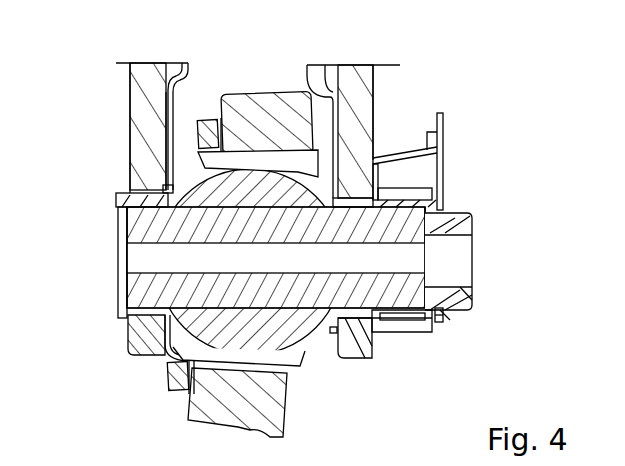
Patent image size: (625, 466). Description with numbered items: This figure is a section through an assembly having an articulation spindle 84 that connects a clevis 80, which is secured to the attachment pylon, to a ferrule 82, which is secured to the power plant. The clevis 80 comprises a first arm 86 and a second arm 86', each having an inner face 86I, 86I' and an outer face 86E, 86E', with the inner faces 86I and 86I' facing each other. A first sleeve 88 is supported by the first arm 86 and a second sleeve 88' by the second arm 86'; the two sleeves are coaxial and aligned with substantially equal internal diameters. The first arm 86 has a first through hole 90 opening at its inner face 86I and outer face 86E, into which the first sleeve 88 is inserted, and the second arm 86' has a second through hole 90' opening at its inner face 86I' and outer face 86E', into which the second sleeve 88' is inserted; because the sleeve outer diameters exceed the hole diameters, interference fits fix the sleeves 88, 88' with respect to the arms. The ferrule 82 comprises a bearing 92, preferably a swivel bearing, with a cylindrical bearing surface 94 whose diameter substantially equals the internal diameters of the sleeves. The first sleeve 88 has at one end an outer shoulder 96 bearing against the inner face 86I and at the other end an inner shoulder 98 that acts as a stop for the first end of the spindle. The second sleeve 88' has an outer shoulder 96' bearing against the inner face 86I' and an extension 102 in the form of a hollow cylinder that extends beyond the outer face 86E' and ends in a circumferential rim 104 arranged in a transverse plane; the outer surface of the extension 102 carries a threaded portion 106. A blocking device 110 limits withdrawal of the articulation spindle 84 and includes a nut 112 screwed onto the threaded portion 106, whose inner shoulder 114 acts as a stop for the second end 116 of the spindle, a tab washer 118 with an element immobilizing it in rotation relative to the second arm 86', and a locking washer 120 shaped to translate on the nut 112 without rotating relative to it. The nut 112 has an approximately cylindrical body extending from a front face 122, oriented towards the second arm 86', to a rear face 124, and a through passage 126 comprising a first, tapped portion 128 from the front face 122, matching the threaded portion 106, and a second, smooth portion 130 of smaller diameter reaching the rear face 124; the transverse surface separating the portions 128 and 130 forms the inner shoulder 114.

The clevis 80 is at (419, 83).
The ferrule 82 is at (235, 404).
The articulation spindle 84 is at (157, 322).
The first arm 86 is at (129, 237).
The outer face of first arm 86E is at (82, 128).
The inner face of first arm 86I is at (199, 105).
The second arm 86' is at (369, 242).
The outer face of second arm 86E' is at (427, 92).
The inner face of second arm 86I' is at (319, 102).
The first sleeve 88 is at (113, 216).
The second sleeve 88' is at (345, 378).
The first through hole 90 is at (117, 183).
The second through hole 90' is at (405, 151).
The bearing 92 is at (254, 166).
The cylindrical bearing surface 94 is at (185, 245).
The outer shoulder of first sleeve 96 is at (151, 361).
The outer shoulder of second sleeve 96' is at (309, 396).
The inner shoulder of first sleeve 98 is at (118, 306).
The extension 102 is at (398, 322).
The circumferential rim 104 is at (460, 307).
The threaded portion 106 is at (417, 321).
The blocking device 110 is at (459, 196).
The nut 112 is at (470, 322).
The inner shoulder of nut 114 is at (418, 313).
The second end of articulation spindle 116 is at (404, 225).
The tab washer 118 is at (373, 322).
The locking washer 120 is at (449, 166).
The front face of nut 122 is at (372, 318).
The rear face of nut 124 is at (472, 228).
The through passage 126 is at (455, 259).
The tapped portion 128 is at (440, 276).
The smooth portion 130 is at (470, 283).